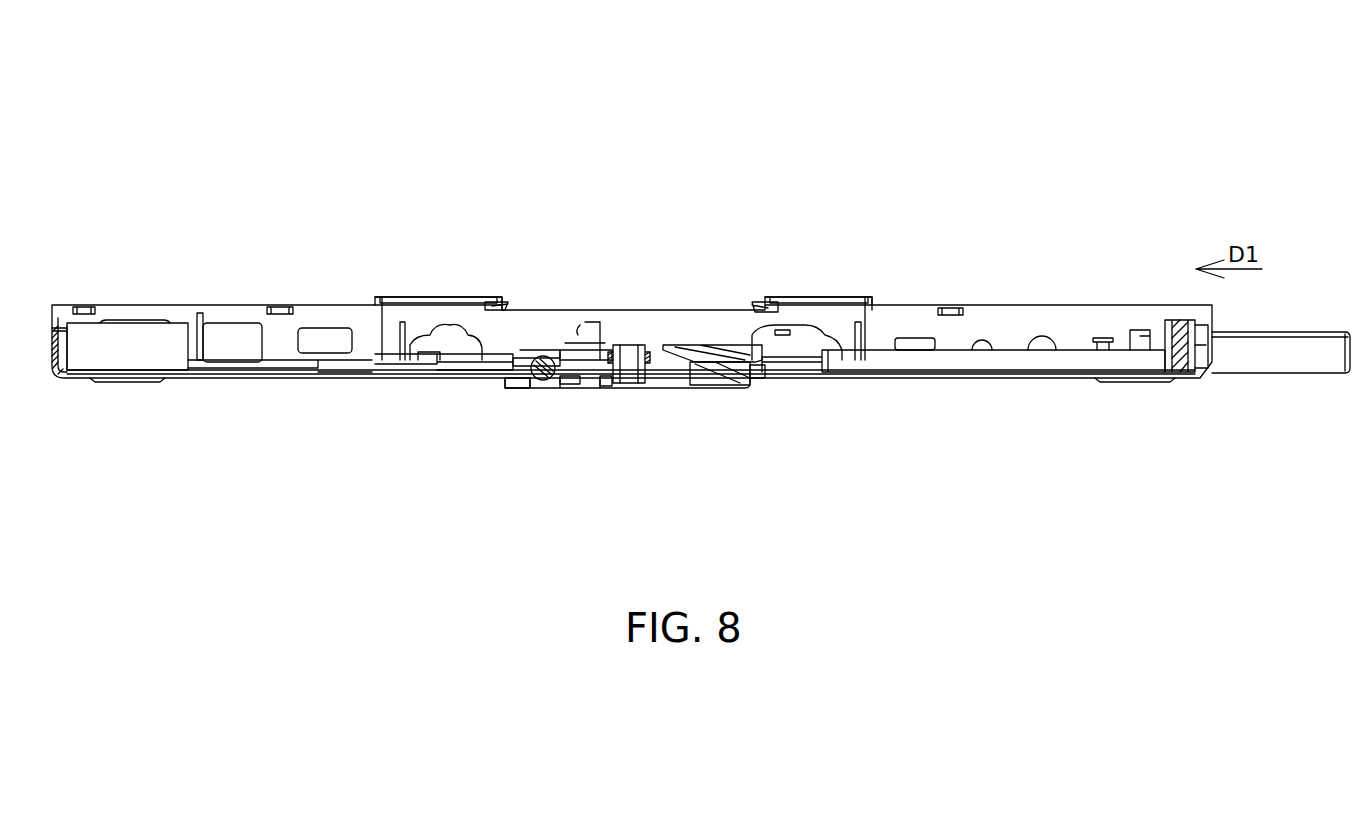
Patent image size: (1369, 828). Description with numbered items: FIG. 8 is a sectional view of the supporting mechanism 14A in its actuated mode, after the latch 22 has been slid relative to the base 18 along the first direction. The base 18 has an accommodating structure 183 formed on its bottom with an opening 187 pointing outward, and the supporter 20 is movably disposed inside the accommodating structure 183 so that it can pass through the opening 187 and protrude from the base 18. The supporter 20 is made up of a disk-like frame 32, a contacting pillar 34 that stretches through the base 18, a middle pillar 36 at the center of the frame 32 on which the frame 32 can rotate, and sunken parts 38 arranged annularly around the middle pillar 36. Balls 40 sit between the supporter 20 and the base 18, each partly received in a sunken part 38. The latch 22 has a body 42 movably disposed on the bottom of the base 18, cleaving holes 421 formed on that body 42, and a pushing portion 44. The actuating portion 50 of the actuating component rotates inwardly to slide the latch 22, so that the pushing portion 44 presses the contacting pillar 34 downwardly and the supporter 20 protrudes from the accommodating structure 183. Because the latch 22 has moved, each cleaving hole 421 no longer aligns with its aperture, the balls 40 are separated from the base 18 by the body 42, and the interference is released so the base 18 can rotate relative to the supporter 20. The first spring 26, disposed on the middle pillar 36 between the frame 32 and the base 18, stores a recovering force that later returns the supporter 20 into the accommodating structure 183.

The supporting mechanism 14A is at (257, 141).
The base 18 is at (118, 358).
The supporter 20 is at (680, 418).
The latch 22 is at (1028, 362).
The first spring 26 is at (590, 350).
The frame 32 is at (590, 388).
The contacting pillar 34 is at (720, 388).
The middle pillar 36 is at (628, 348).
The sunken parts 38 is at (556, 388).
The ball 40 is at (553, 350).
The body 42 is at (455, 350).
The cleaving hole 421 is at (498, 352).
The pushing portion 44 is at (735, 348).
The actuating portion 50 is at (1178, 370).
The accommodating structure 183 is at (758, 372).
The opening 187 is at (503, 386).